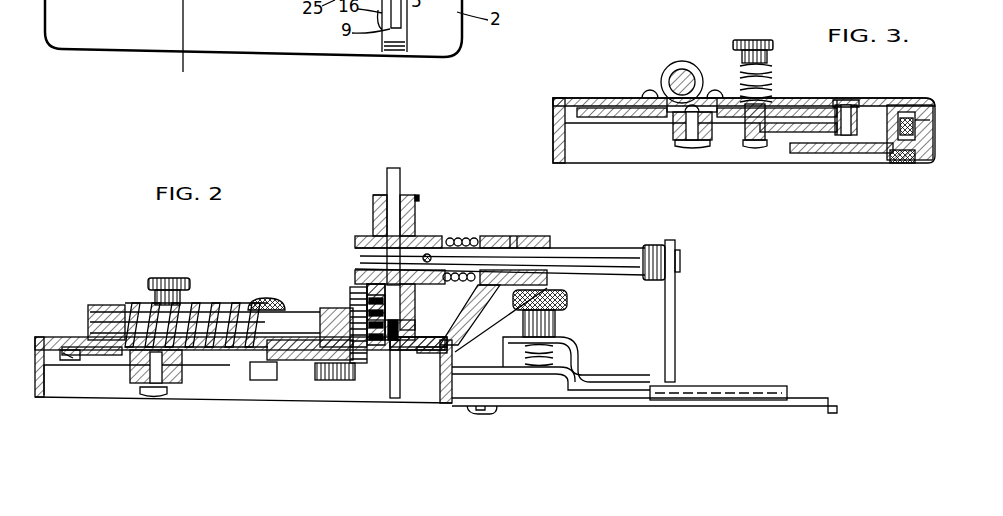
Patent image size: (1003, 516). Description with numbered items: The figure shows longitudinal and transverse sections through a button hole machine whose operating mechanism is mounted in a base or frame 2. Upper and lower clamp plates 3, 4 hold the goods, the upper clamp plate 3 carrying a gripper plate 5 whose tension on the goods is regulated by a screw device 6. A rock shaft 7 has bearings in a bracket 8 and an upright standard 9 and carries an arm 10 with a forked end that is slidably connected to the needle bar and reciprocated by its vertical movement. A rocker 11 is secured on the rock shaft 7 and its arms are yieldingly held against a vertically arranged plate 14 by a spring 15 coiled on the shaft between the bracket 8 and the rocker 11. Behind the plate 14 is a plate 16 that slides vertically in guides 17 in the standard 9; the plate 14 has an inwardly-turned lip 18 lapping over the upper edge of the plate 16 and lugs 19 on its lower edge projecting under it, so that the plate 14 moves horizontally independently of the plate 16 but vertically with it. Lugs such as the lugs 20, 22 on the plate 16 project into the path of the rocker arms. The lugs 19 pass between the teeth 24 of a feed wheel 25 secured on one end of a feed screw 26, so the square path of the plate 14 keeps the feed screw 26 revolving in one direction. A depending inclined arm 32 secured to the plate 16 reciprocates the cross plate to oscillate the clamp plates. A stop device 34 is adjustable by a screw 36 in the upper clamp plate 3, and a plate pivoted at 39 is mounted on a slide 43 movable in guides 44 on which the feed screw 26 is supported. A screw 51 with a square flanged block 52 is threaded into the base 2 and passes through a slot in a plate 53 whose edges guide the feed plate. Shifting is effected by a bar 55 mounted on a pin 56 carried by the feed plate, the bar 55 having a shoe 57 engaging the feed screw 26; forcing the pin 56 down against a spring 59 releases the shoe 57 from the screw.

In FIG. 2, the base or frame 2 is at (43, 337).
In FIG. 3, the base or frame 2 is at (872, 100).
In FIG. 2, the upper clamp plate 3 is at (560, 375).
In FIG. 2, the lower clamp plate 4 is at (543, 407).
In FIG. 2, the gripper plate 5 is at (608, 383).
In FIG. 2, the screw device 6 is at (570, 303).
In FIG. 2, the rock shaft 7 is at (577, 257).
In FIG. 2, the bracket 8 is at (540, 240).
In FIG. 2, the upright standard 9 is at (378, 173).
In FIG. 2, the arm 10 is at (675, 312).
In FIG. 2, the rocker 11 is at (420, 235).
In FIG. 2, the vertically arranged plate 14 is at (402, 193).
In FIG. 2, the spring 15 is at (470, 238).
In FIG. 2, the plate 16 is at (373, 213).
In FIG. 2, the guides 17 is at (395, 168).
In FIG. 2, the inwardly-turned lip 18 is at (375, 193).
In FIG. 2, the lugs 19 is at (387, 347).
In FIG. 2, the lug 20 is at (420, 197).
In FIG. 2, the lug 22 is at (428, 320).
In FIG. 2, the teeth 24 is at (372, 293).
In FIG. 2, the feed wheel 25 is at (353, 293).
In FIG. 2, the feed screw 26 is at (295, 323).
In FIG. 3, the feed screw 26 is at (683, 67).
In FIG. 2, the depending inclined arm 32 is at (400, 383).
In FIG. 2, the stop device 34 is at (250, 377).
In FIG. 2, the screw 36 is at (268, 298).
In FIG. 2, the pivot 39 is at (318, 377).
In FIG. 2, the slide 43 is at (63, 358).
In FIG. 2, the guides 44 is at (63, 360).
In FIG. 3, the screw 51 is at (845, 100).
In FIG. 3, the square flanged block 52 is at (835, 110).
In FIG. 3, the plate 53 is at (892, 110).
In FIG. 2, the bar 55 is at (182, 383).
In FIG. 3, the bar 55 is at (713, 137).
In FIG. 2, the pin 56 is at (157, 275).
In FIG. 3, the pin 56 is at (768, 38).
In FIG. 2, the shoe 57 is at (167, 350).
In FIG. 3, the shoe 57 is at (673, 100).
In FIG. 3, the spring 59 is at (767, 80).